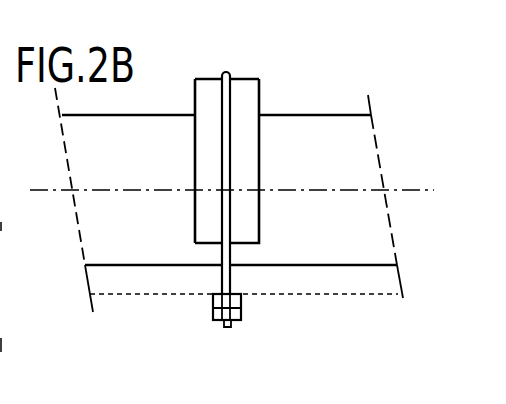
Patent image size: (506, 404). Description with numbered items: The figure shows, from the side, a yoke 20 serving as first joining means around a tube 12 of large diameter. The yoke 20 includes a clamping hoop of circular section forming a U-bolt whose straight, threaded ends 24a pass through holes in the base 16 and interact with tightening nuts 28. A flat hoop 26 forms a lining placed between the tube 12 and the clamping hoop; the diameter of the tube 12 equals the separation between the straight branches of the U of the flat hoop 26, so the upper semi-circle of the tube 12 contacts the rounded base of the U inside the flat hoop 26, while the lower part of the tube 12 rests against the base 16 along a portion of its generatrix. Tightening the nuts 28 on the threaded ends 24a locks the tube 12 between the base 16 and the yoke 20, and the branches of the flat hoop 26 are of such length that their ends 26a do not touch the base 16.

The tube 12 is at (300, 123).
The base 16 is at (181, 276).
The yoke 20 is at (195, 80).
The flat hoop 26 is at (281, 165).
The ends of the flat hoop 26a is at (240, 237).
The threaded ends 24a is at (233, 280).
The tightening nuts 28 is at (218, 312).